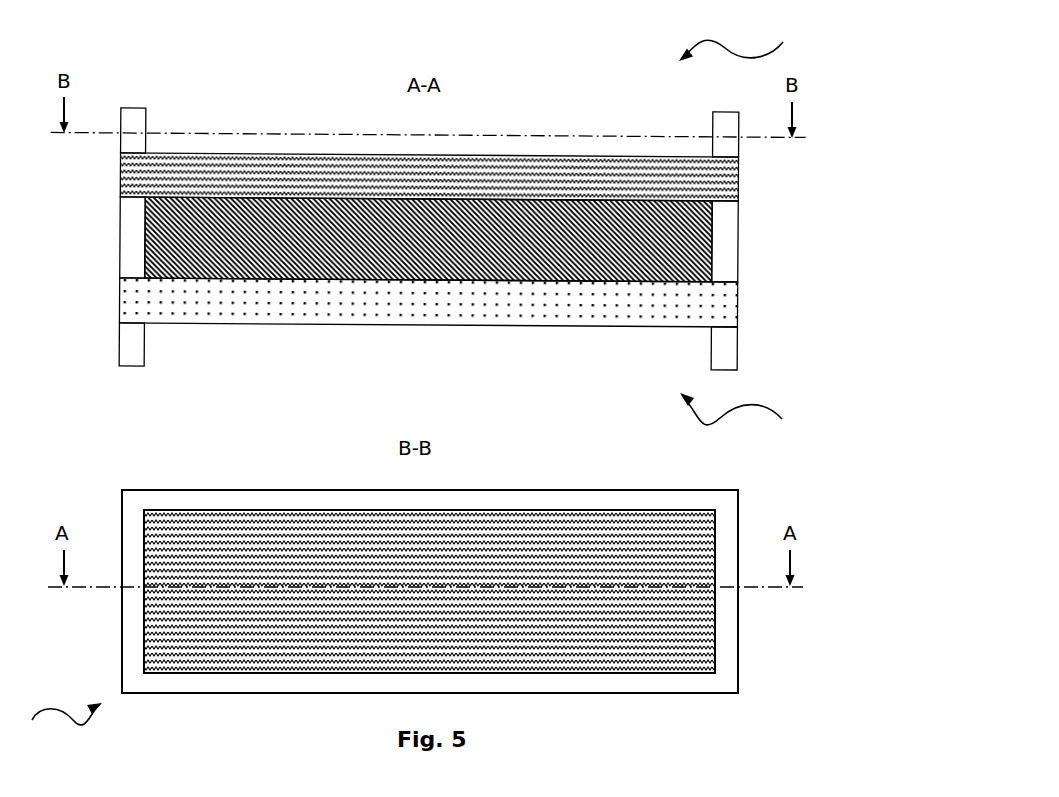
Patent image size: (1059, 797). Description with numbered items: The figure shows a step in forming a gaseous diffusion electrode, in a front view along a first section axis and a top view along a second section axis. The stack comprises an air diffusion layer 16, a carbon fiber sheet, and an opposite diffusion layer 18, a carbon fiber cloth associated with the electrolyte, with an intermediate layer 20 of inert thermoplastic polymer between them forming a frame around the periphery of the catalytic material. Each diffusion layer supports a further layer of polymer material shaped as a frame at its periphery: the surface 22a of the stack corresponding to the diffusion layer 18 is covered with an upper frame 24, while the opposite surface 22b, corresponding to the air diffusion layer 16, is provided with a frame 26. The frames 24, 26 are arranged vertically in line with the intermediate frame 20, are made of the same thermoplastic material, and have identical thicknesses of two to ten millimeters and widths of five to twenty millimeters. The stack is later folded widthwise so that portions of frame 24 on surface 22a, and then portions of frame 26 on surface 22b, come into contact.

The air diffusion layer 16 is at (120, 300).
The diffusion layer 18 is at (120, 172).
The polymer layer 20 is at (120, 247).
The surface of the stack 22a is at (417, 384).
The opposite surface of the stack 22b is at (752, 419).
The upper frame 24 is at (145, 112).
The frame 26 is at (145, 342).